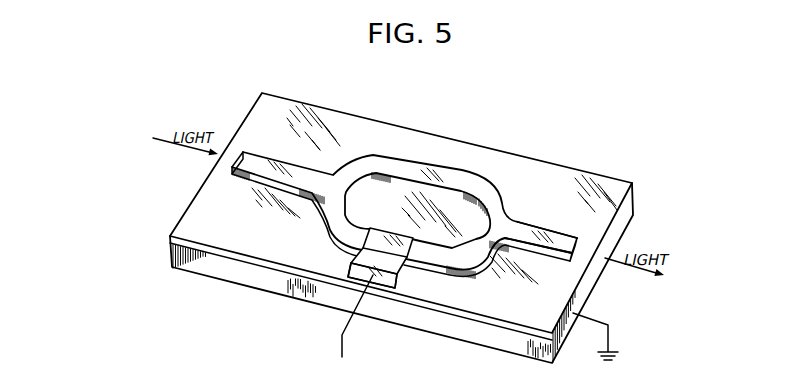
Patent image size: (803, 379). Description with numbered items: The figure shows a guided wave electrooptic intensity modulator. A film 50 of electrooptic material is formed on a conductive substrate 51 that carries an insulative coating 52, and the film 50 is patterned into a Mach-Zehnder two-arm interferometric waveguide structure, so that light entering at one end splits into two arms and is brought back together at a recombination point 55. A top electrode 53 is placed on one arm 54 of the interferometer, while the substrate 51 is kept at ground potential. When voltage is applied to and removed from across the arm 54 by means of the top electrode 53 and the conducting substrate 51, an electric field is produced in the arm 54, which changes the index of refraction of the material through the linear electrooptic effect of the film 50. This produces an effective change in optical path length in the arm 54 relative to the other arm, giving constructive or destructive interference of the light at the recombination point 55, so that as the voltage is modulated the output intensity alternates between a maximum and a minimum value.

The film 50 is at (487, 190).
The conductive substrate 51 is at (220, 272).
The insulative coating 52 is at (174, 241).
The top electrode 53 is at (393, 268).
The arm 54 is at (348, 231).
The recombination point 55 is at (506, 228).